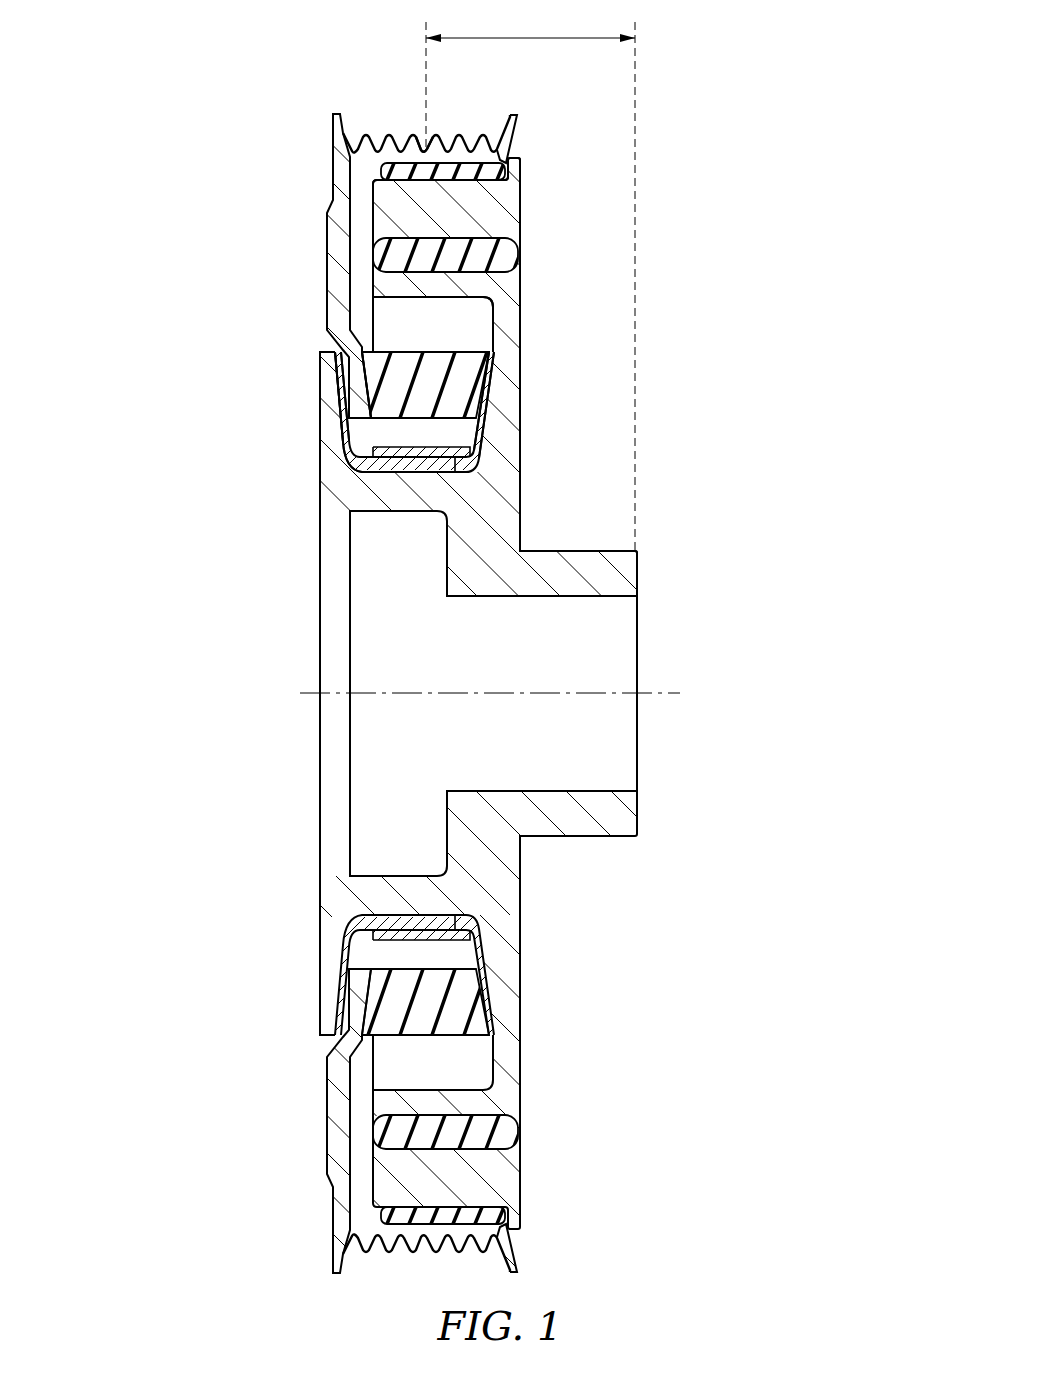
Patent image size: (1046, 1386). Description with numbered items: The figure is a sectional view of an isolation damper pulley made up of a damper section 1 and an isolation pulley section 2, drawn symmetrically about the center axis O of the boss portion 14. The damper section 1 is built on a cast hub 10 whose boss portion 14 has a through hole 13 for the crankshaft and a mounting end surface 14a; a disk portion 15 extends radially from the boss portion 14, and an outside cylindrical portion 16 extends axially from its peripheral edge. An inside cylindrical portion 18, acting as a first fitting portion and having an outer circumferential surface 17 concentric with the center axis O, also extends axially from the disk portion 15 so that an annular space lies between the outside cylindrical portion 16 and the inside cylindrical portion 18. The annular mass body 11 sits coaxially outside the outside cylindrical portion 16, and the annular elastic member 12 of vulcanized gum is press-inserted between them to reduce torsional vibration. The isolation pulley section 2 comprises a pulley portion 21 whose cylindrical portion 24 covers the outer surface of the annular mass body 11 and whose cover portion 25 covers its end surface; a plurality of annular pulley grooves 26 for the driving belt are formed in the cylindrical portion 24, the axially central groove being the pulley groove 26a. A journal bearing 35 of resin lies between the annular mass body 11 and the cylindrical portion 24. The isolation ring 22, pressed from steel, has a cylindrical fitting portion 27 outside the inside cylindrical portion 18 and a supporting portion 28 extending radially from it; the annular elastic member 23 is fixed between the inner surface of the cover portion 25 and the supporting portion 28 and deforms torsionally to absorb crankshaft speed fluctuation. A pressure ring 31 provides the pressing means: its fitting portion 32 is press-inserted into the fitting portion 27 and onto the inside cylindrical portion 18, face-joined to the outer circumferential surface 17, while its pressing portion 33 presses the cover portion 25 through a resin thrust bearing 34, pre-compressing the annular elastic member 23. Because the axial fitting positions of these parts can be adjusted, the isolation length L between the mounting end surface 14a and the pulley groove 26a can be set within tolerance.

The damper section 1 is at (668, 246).
The isolation pulley section 2 is at (203, 45).
The hub 10 is at (548, 515).
The annular mass body 11 is at (493, 198).
The annular elastic member 12 is at (497, 253).
The through hole 13 is at (585, 790).
The boss portion 14 is at (610, 562).
The mounting end surface 14a is at (637, 594).
The disk portion 15 is at (505, 323).
The outside cylindrical portion 16 is at (442, 289).
The outer circumferential surface 17 is at (352, 475).
The inside cylindrical portion 18 is at (383, 495).
The pulley portion 21 is at (291, 74).
The isolation ring 22 is at (492, 432).
The annular elastic member 23 is at (395, 402).
The cylindrical portion 24 is at (398, 158).
The cover portion 25 is at (333, 246).
The annular pulley grooves 26 is at (471, 150).
The axial-directional-central pulley groove 26a is at (420, 150).
The cylindrical fitting portion 27 is at (479, 467).
The supporting portion 28 is at (482, 392).
The pressure ring 31 is at (328, 461).
The cylindrical fitting portion 32 is at (401, 475).
The pressing portion 33 is at (336, 433).
The thrust bearing 34 is at (336, 372).
The journal bearing 35 is at (497, 167).
The center axis O is at (643, 693).
The isolation length L is at (530, 280).